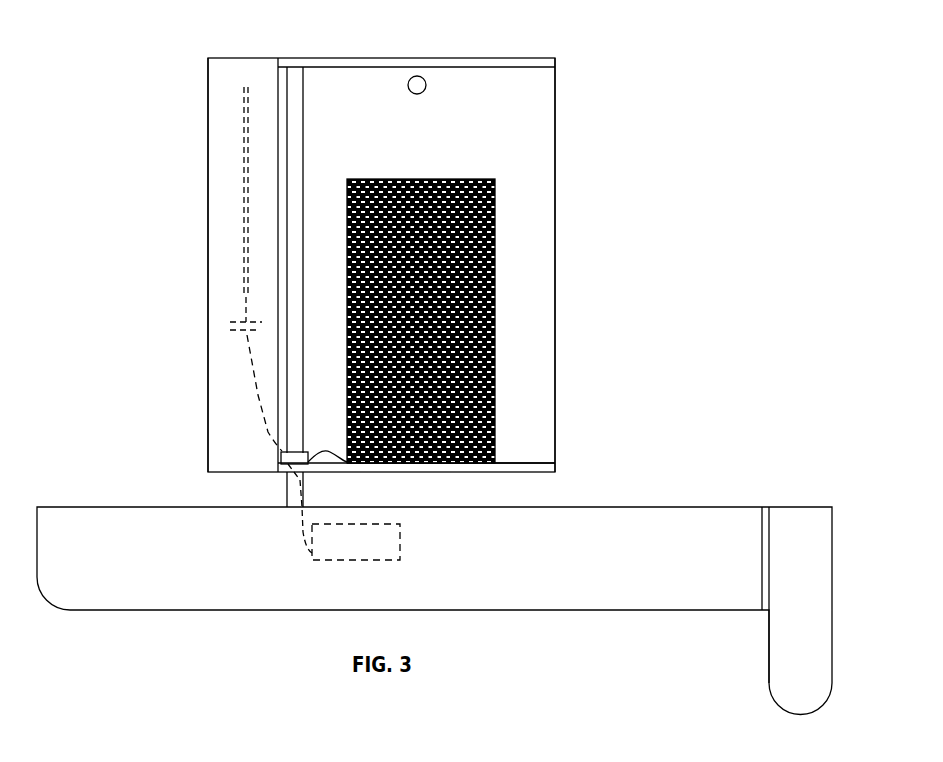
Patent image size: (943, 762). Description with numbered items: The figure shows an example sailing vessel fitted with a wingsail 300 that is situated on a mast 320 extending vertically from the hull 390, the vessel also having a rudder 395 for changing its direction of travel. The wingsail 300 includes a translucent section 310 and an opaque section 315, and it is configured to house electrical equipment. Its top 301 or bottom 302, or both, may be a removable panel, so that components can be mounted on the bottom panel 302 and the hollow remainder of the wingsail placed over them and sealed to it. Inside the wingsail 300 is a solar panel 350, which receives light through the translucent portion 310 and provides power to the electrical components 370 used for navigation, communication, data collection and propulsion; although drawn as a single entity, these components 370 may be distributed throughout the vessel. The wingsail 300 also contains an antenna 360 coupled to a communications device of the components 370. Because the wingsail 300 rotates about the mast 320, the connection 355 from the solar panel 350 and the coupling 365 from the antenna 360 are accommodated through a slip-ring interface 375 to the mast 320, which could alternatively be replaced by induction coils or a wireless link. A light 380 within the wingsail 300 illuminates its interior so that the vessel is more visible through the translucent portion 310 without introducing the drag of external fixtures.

The wingsail 300 is at (458, 58).
The top of the wingsail 301 is at (400, 63).
The bottom panel of the wingsail 302 is at (452, 473).
The translucent section 310 is at (497, 108).
The opaque section 315 is at (235, 78).
The mast 320 is at (297, 92).
The solar panel 350 is at (495, 425).
The connection 355 is at (322, 455).
The antenna 360 is at (243, 190).
The coupling 365 is at (260, 397).
The electrical components 370 is at (348, 542).
The slip-ring interface 375 is at (290, 458).
The light 380 is at (408, 82).
The hull 390 is at (140, 610).
The rudder 395 is at (798, 610).